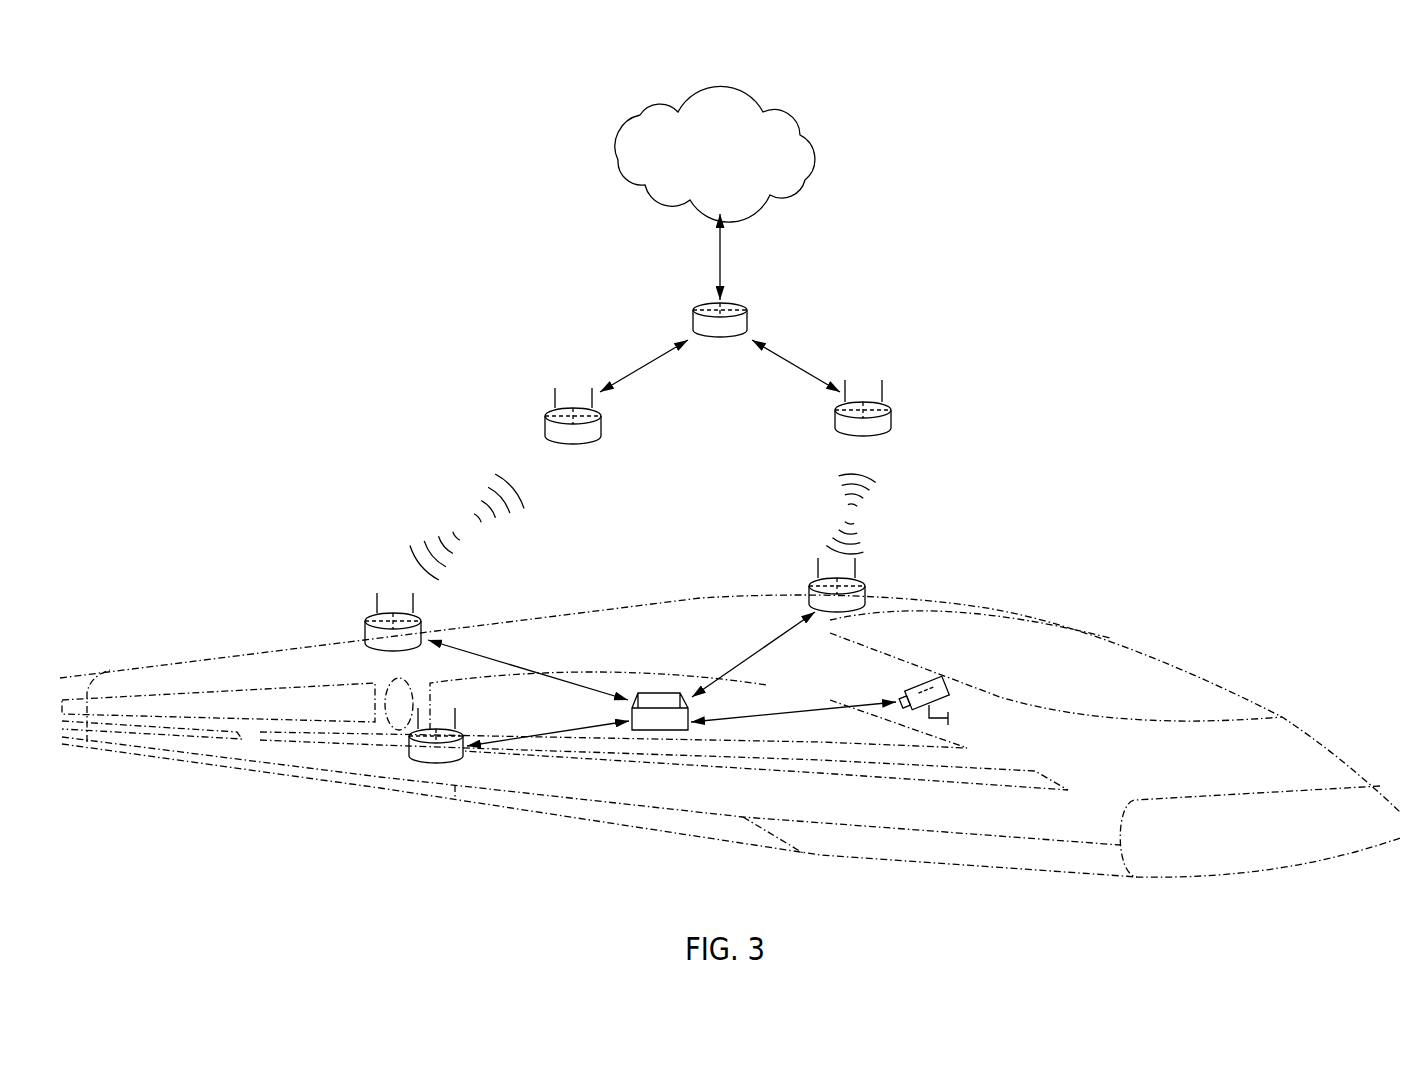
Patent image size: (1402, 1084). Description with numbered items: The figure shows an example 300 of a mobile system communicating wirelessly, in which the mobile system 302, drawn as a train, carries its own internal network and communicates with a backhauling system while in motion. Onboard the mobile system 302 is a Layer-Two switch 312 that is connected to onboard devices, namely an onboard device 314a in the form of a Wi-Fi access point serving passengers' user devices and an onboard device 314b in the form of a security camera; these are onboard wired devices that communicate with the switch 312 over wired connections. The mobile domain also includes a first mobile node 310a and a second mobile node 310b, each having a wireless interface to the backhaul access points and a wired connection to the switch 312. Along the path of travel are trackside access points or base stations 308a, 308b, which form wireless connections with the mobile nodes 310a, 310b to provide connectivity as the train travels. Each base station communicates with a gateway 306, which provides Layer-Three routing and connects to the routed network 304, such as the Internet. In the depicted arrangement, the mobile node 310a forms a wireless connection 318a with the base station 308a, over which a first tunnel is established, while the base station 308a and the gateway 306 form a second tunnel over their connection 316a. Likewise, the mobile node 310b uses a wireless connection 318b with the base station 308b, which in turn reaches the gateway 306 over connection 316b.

The example of a mobile system communicating wirelessly 300 is at (1016, 80).
The mobile system 302 is at (1083, 628).
The L3-routed network 304 is at (803, 133).
The gateway 306 is at (750, 320).
The trackside access point/base station 308a is at (893, 421).
The trackside access point/base station 308b is at (544, 427).
The first mobile node 310a is at (807, 597).
The second mobile node 310b is at (363, 635).
The Layer-2 switch 312 is at (672, 702).
The onboard device 314a is at (433, 762).
The onboard device 314b is at (925, 682).
The connection 316a is at (800, 357).
The connection 316b is at (632, 355).
The wireless connection 318a is at (870, 508).
The wireless connection 318b is at (450, 526).